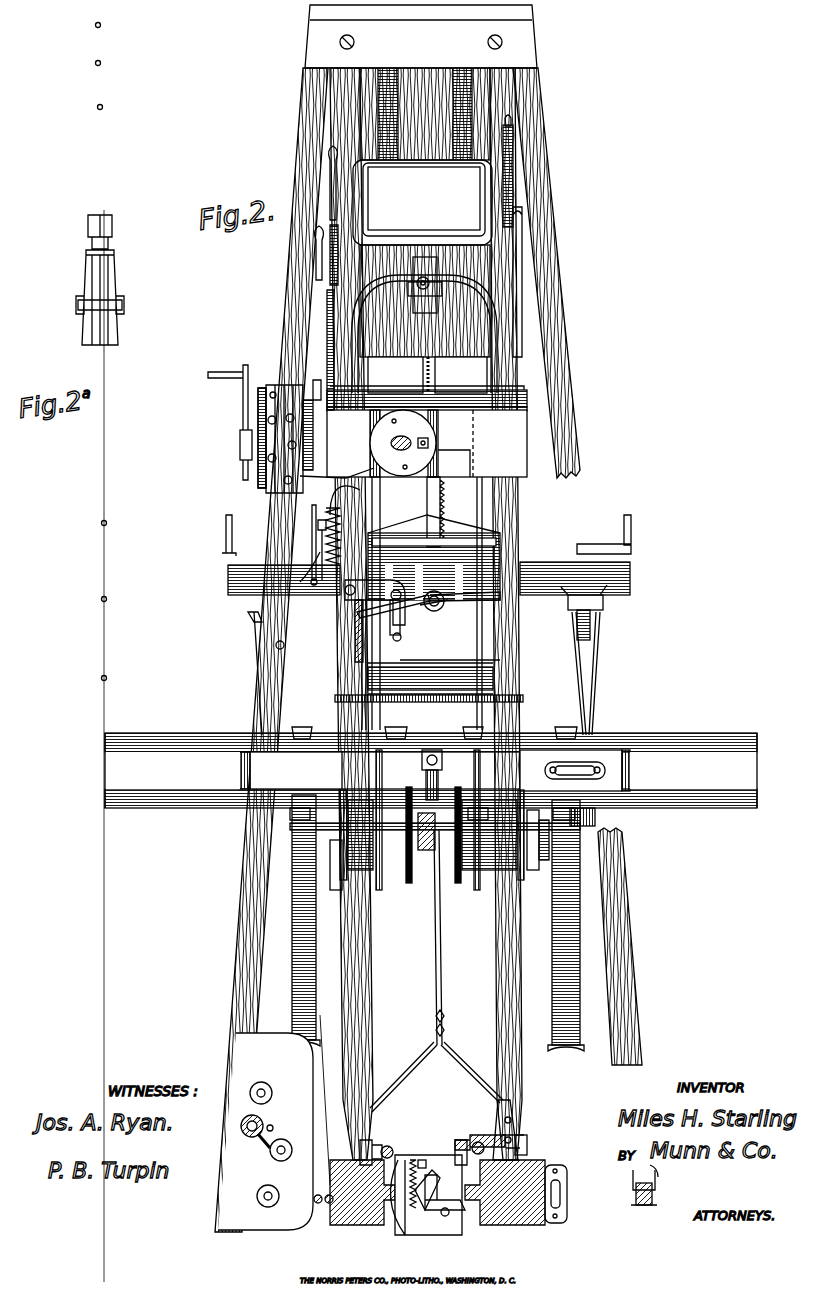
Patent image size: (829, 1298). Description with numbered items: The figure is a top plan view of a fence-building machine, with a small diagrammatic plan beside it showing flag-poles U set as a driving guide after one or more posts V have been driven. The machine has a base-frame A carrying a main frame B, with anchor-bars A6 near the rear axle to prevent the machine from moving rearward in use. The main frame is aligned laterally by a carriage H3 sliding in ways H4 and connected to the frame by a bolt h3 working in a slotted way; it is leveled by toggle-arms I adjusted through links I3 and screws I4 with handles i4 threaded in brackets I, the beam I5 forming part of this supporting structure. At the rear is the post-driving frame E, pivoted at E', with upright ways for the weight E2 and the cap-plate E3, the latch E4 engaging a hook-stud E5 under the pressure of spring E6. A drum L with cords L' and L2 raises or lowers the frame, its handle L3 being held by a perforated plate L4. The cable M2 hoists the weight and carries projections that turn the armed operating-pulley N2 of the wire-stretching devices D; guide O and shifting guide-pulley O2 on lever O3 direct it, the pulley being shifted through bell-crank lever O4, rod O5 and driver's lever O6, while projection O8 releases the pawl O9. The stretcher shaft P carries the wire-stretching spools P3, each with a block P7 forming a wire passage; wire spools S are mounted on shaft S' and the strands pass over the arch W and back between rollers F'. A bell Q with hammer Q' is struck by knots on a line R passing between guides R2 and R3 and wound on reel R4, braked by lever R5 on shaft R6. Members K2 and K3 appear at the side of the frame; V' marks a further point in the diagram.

In FIG. 2A, the base-frame A is at (90, 746).
In FIG. 2A, the flag-poles U is at (110, 66).
In FIG. 2A, the posts V is at (91, 561).
In FIG. 2A, the guide point V' is at (91, 669).
In FIG. 2, the line R is at (268, 650).
In FIG. 2, the main frame B is at (518, 516).
In FIG. 2, the toothed strip K3 is at (512, 165).
In FIG. 2, the lever K2 is at (522, 268).
In FIG. 2, the spools S is at (422, 246).
In FIG. 2, the shaft S' is at (424, 324).
In FIG. 2, the shaft P is at (372, 442).
In FIG. 2, the block P7 is at (406, 445).
In FIG. 2, the wire-stretching spools P3 is at (436, 458).
In FIG. 2, the pawl O9 is at (332, 467).
In FIG. 2, the operating-pulley N2 is at (436, 485).
In FIG. 2, the shaft R6 is at (250, 446).
In FIG. 2, the reel R4 is at (262, 472).
In FIG. 2, the lever R5 is at (316, 340).
In FIG. 2, the rod O5 is at (312, 550).
In FIG. 2, the lever O6 is at (330, 184).
In FIG. 2, the projection O8 is at (320, 522).
In FIG. 2, the handles i4 is at (654, 534).
In FIG. 2, the cross beam I5 is at (638, 592).
In FIG. 2, the screws I4 is at (588, 568).
In FIG. 2, the links I3 is at (600, 690).
In FIG. 2, the bell-crank lever O4 is at (352, 627).
In FIG. 2, the lever O3 is at (428, 617).
In FIG. 2, the shifting guide-pulley O2 is at (430, 610).
In FIG. 2, the guide O is at (414, 652).
In FIG. 2, the arch W is at (432, 692).
In FIG. 2, the bolt h3 is at (429, 711).
In FIG. 2, the carriage H3 is at (431, 770).
In FIG. 2, the ways H4 is at (560, 726).
In FIG. 2, the cord L' is at (428, 820).
In FIG. 2, the drum L is at (433, 848).
In FIG. 2, the handle L3 is at (537, 852).
In FIG. 2, the perforated plate L4 is at (546, 866).
In FIG. 2, the toggle-arm I is at (600, 826).
In FIG. 2, the cord L2 is at (432, 980).
In FIG. 2, the cable M2 is at (446, 1000).
In FIG. 2, the anchor-bars A6 is at (296, 960).
In FIG. 2, the guide R3 is at (292, 1146).
In FIG. 2, the guide R2 is at (258, 1084).
In FIG. 2, the alarm Q is at (243, 1125).
In FIG. 2, the hammer Q' is at (255, 1152).
In FIG. 2, the pins F' is at (306, 1109).
In FIG. 2, the post-driving frame E is at (516, 1192).
In FIG. 2, the weight E2 is at (362, 1192).
In FIG. 2, the pivot E' is at (450, 1141).
In FIG. 2, the cap-plate E3 is at (448, 1156).
In FIG. 2, the latch E4 is at (440, 1200).
In FIG. 2, the hook-stud E5 is at (416, 1175).
In FIG. 2, the spring E6 is at (406, 1160).
In FIG. 2, the wire-stretching devices D is at (422, 1142).